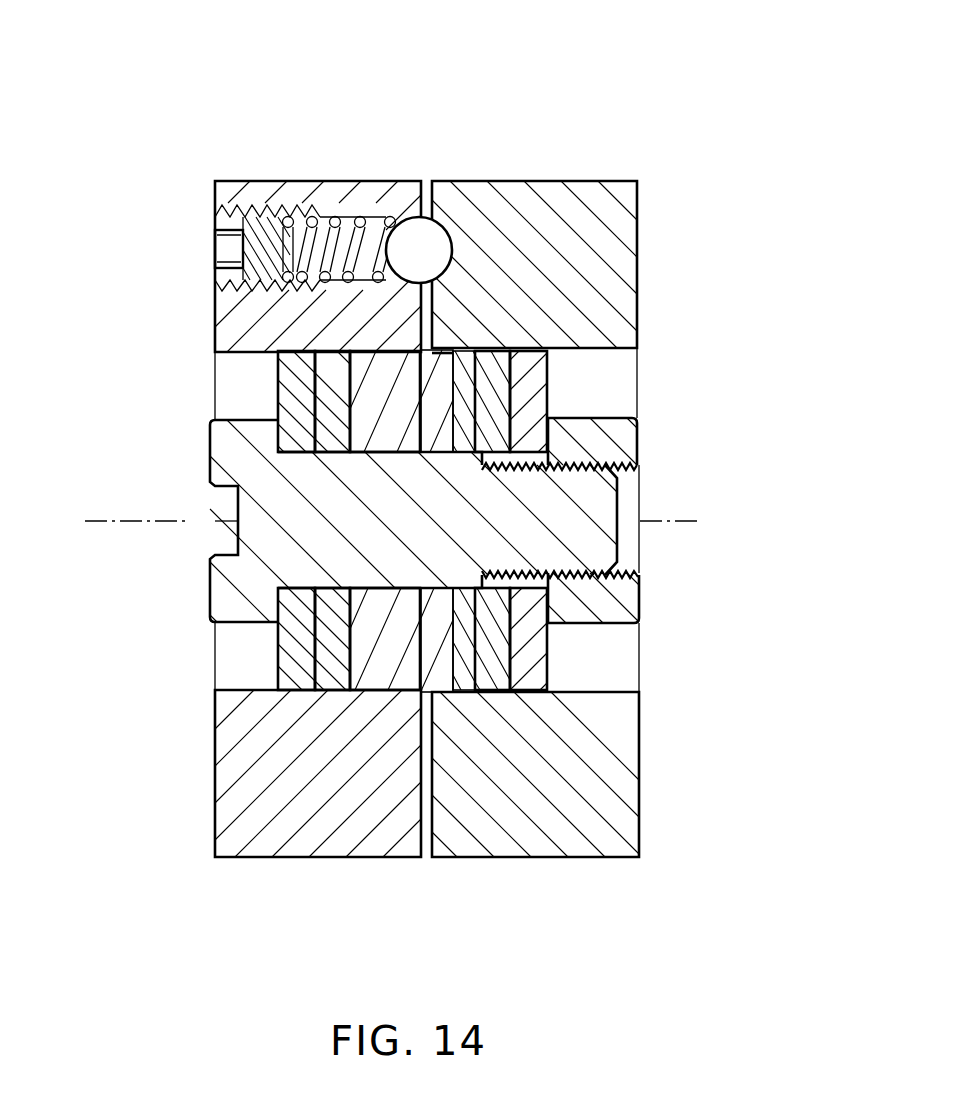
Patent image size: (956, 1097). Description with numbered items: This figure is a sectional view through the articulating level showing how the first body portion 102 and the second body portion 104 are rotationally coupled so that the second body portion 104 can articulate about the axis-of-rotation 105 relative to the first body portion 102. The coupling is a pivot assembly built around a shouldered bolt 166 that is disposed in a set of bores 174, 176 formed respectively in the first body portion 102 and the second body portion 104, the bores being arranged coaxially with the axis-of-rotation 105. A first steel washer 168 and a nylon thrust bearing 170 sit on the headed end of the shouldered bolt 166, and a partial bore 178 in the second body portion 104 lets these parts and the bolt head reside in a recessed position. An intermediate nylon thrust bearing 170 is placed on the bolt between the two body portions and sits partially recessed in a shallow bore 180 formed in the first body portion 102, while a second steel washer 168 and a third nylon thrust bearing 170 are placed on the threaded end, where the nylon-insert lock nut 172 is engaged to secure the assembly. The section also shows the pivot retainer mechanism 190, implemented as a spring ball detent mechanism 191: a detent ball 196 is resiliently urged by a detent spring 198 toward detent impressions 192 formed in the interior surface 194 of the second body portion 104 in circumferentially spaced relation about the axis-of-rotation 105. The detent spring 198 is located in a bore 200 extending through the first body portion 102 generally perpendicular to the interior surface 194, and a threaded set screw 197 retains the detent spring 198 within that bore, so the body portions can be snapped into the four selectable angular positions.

The first body portion 102 is at (172, 162).
The second body portion 104 is at (694, 163).
The axis-of-rotation 105 is at (713, 516).
The shouldered bolt 166 is at (212, 447).
The steel washer 168 is at (280, 402).
The nylon thrust bearing 170 is at (322, 372).
The nylon-insert lock nut 172 is at (640, 597).
The bore 174 is at (383, 590).
The bore 176 is at (418, 678).
The partial bore 178 is at (227, 657).
The shallow bore 180 is at (463, 335).
The pivot retainer mechanism 190 is at (447, 140).
The spring ball detent mechanism 191 is at (250, 123).
The detent impression 192 is at (452, 237).
The interior surface 194 is at (433, 297).
The detent ball 196 is at (467, 212).
The threaded set screw 197 is at (217, 263).
The detent spring 198 is at (325, 212).
The bore 200 is at (398, 212).